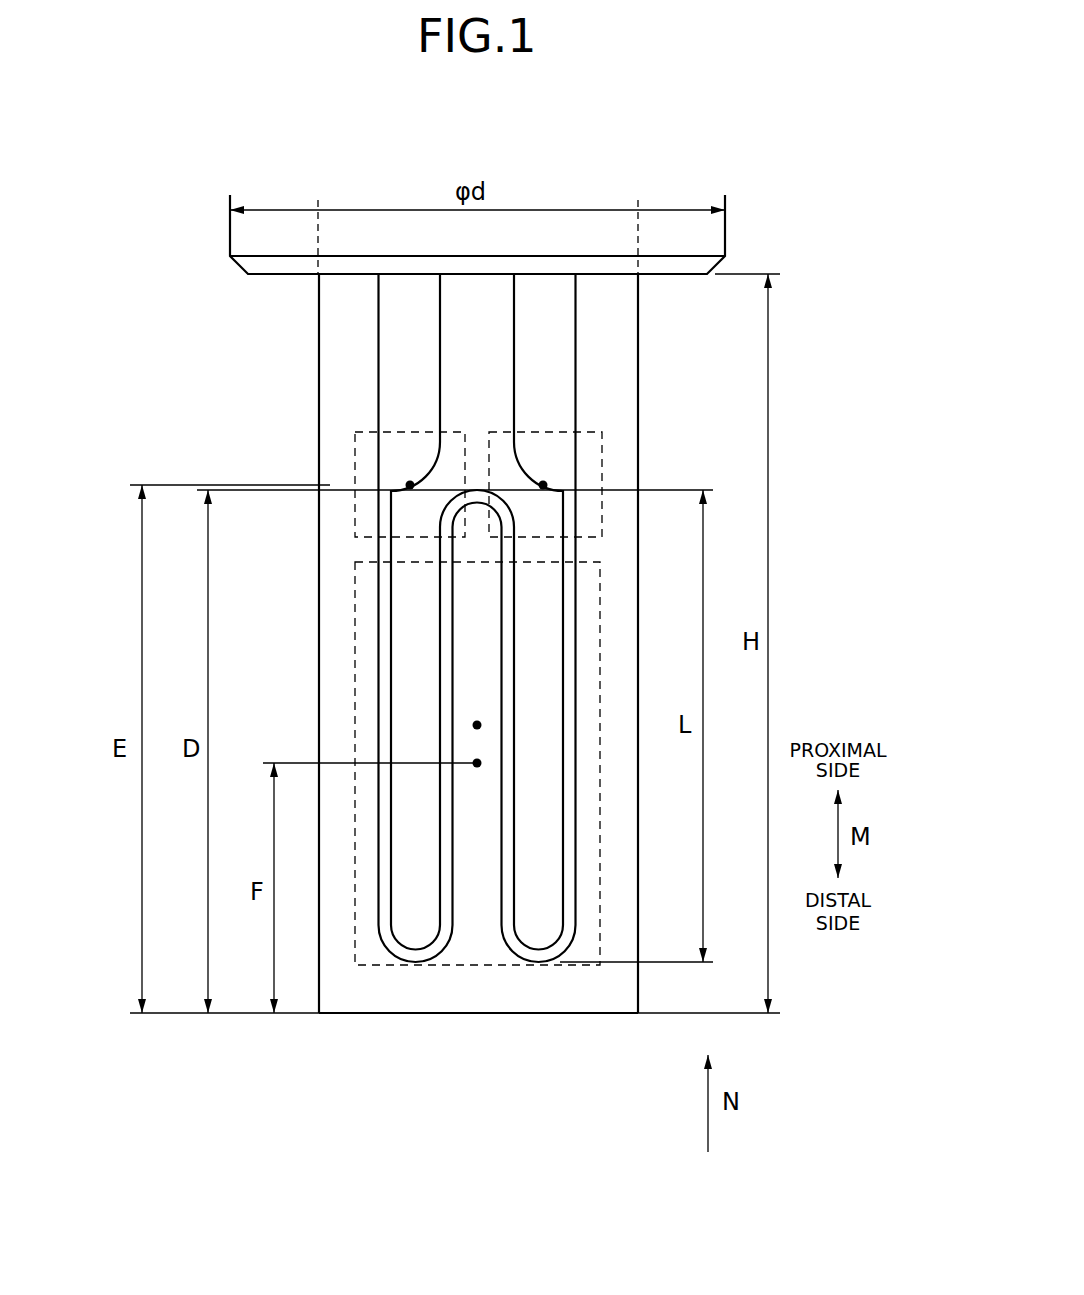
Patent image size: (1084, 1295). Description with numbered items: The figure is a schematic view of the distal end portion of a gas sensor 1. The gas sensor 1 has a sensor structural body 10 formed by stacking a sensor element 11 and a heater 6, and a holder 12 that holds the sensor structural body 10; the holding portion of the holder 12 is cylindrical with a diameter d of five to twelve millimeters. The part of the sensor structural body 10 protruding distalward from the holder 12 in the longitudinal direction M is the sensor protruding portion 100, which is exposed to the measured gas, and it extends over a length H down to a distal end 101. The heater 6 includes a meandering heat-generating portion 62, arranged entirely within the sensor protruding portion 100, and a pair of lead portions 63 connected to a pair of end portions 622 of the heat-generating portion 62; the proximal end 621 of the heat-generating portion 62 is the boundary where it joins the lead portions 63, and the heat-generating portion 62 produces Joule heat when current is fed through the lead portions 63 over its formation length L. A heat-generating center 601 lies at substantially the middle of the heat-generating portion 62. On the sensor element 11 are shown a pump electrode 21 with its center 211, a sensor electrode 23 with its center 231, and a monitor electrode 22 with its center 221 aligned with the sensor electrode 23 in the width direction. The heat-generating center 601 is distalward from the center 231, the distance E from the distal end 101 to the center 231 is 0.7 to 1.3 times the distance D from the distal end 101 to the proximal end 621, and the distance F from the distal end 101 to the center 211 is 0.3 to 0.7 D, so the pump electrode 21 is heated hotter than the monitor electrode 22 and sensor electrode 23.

The gas sensor 1 is at (758, 212).
The sensor protruding portion 100 is at (312, 350).
The distal end of the sensor protruding portion 101 is at (337, 1013).
The sensor structural body 10 is at (701, 295).
The sensor element 11 is at (613, 294).
The heater 6 is at (610, 323).
The holder 12 is at (558, 237).
The lead portions 63 is at (417, 310).
The heat-generating portion 62 is at (567, 937).
The proximal end of the heat-generating portion 621 is at (670, 488).
The end portions of the heat-generating portion 622 is at (567, 497).
The heat-generating center 601 is at (477, 725).
The center of the pump electrode 211 is at (477, 763).
The pump electrode 21 is at (483, 945).
The sensor electrode 23 is at (365, 470).
The center of the sensor electrode 231 is at (410, 485).
The monitor electrode 22 is at (595, 470).
The center of the monitor electrode 221 is at (543, 485).